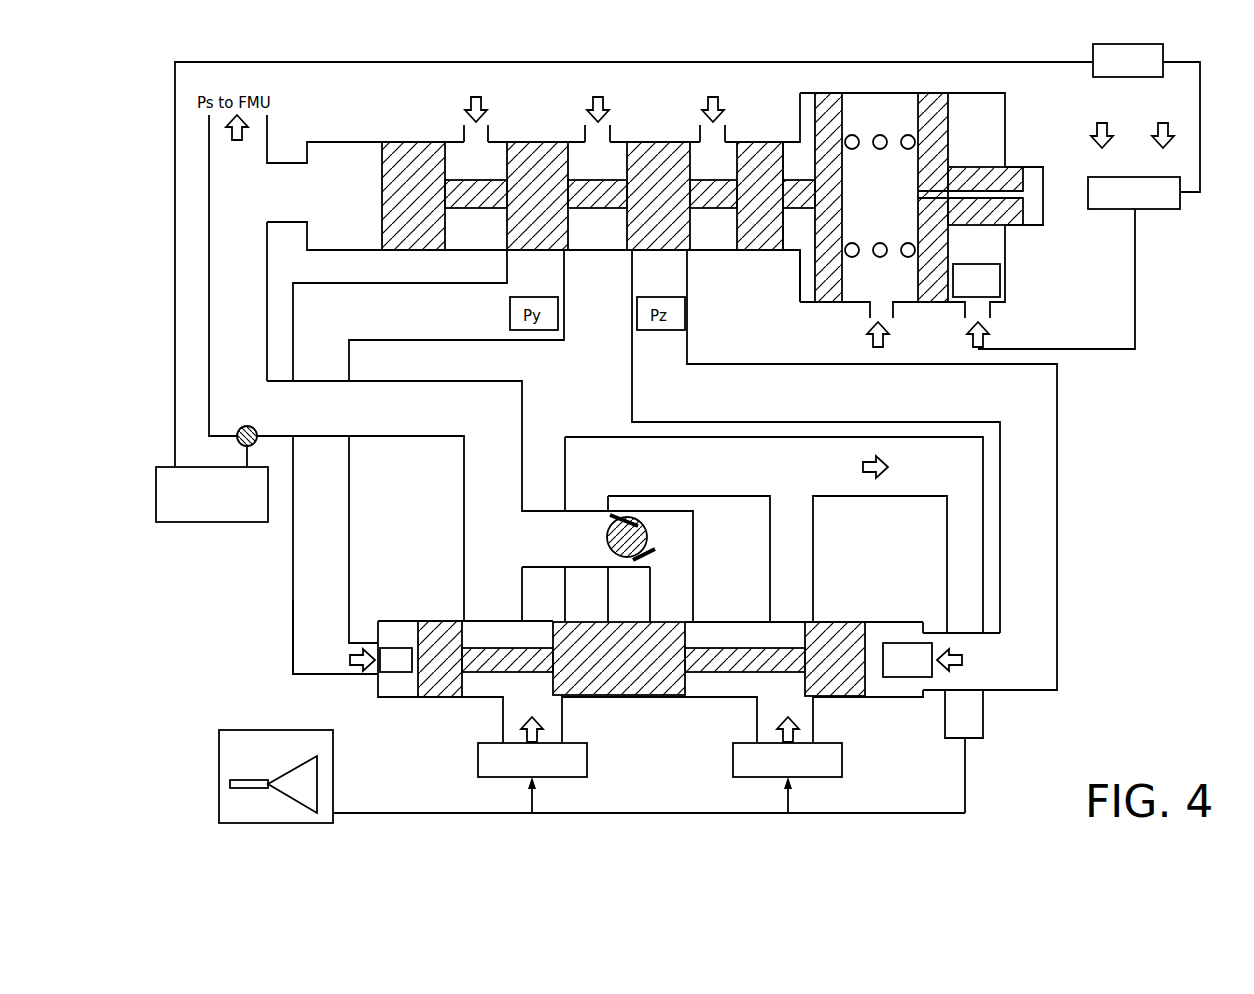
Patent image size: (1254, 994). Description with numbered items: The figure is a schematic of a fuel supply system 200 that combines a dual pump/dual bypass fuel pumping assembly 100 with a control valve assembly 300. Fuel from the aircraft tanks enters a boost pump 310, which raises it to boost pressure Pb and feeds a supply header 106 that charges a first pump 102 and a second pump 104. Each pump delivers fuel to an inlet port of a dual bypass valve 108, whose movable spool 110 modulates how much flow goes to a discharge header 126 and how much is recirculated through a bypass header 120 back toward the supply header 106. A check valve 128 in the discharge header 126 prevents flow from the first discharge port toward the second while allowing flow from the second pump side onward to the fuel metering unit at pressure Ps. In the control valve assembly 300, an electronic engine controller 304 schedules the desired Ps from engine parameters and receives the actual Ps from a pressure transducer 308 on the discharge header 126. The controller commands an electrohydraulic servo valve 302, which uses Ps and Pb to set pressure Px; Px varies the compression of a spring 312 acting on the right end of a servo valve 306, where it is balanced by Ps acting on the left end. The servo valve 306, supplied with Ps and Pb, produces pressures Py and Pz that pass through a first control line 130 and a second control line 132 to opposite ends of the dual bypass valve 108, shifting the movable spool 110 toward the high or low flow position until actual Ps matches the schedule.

The dual pump/dual bypass fuel pumping assembly 100 is at (796, 654).
The first pump 102 is at (555, 763).
The second pump 104 is at (810, 760).
The supply header 106 is at (485, 813).
The dual bypass valve 108 is at (873, 585).
The movable spool 110 is at (830, 655).
The bypass header 120 is at (774, 535).
The discharge header 126 is at (488, 482).
The check valve 128 is at (630, 540).
The first control line 130 is at (316, 634).
The second control line 132 is at (1023, 593).
The fuel supply system 200 is at (150, 100).
The control valve assembly 300 is at (986, 233).
The electrohydraulic servo valve 302 is at (1135, 196).
The electronic engine controller 304 is at (1135, 68).
The servo valve 306 is at (414, 124).
The pressure transducer 308 is at (223, 505).
The boost pump 310 is at (255, 730).
The spring 312 is at (880, 136).